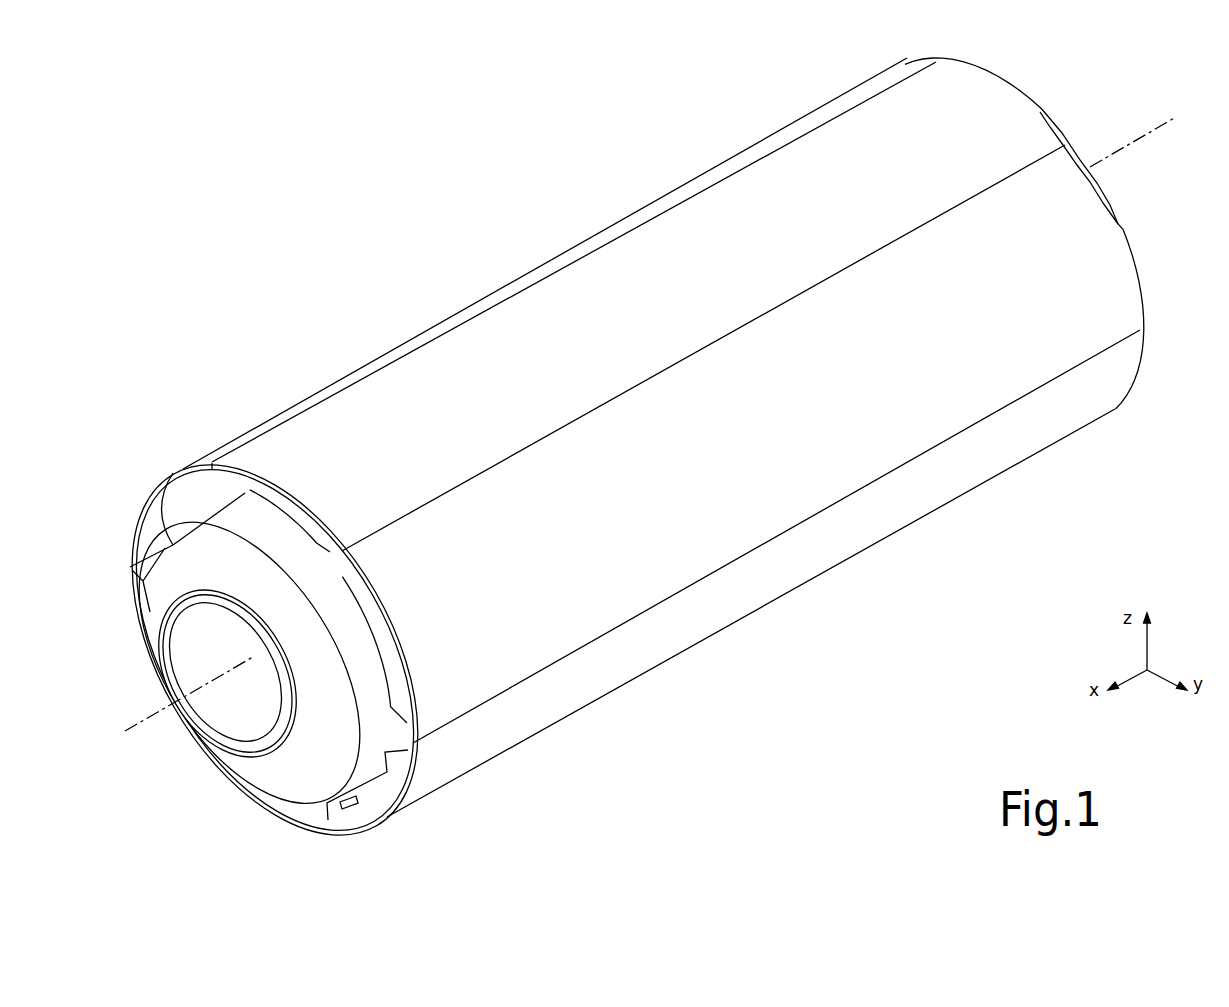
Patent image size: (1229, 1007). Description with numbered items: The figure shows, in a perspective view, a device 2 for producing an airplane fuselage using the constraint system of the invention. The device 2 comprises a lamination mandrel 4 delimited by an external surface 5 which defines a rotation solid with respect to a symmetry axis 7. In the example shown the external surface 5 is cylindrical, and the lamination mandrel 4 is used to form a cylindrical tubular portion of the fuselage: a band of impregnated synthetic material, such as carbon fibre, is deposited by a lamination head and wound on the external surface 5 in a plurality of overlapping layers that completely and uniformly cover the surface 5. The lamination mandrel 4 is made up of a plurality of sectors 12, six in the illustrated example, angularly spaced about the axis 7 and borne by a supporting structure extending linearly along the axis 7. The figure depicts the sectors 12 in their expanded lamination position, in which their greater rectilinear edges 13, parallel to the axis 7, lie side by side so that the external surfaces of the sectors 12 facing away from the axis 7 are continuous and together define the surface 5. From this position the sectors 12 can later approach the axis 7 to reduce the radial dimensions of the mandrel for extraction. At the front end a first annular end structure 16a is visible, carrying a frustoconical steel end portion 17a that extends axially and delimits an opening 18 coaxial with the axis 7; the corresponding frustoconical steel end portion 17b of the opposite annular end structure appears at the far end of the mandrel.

The device 2 is at (462, 272).
The lamination mandrel 4 is at (652, 197).
The external surface 5 is at (868, 548).
The symmetry axis 7 is at (127, 730).
The sectors 12 is at (378, 405).
The greater rectilinear edges 13 is at (658, 382).
The first annular end structure 16a is at (217, 496).
The frustoconical steel end portion 17a is at (176, 549).
The frustoconical steel end portion 17b is at (1047, 108).
The opening 18 is at (184, 678).